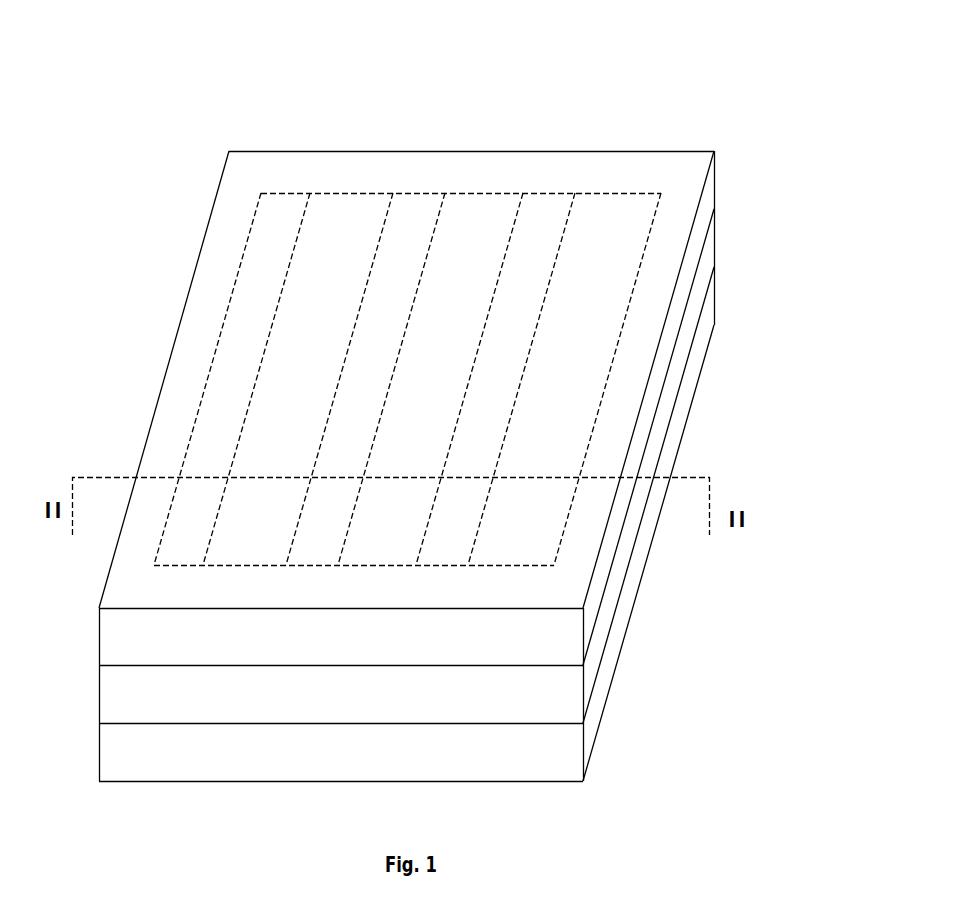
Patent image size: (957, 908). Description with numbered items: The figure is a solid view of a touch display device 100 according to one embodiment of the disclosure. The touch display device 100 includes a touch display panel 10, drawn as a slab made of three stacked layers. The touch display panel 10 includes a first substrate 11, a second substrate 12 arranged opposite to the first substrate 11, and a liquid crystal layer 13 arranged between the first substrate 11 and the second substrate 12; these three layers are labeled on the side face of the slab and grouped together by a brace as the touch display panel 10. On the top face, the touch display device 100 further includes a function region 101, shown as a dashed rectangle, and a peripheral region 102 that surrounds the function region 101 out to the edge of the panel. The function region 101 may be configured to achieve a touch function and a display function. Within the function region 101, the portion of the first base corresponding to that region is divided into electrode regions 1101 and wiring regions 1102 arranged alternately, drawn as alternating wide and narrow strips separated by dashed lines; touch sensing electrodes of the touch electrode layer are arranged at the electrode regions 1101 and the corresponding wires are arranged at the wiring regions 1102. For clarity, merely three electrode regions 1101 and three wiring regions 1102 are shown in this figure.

The touch display device 100 is at (513, 40).
The touch display panel 10 is at (792, 157).
The first substrate 11 is at (712, 206).
The second substrate 12 is at (712, 315).
The liquid crystal layer 13 is at (712, 261).
The function region 101 is at (327, 206).
The peripheral region 102 is at (249, 181).
The electrode region 1101 is at (460, 217).
The wiring region 1102 is at (550, 215).